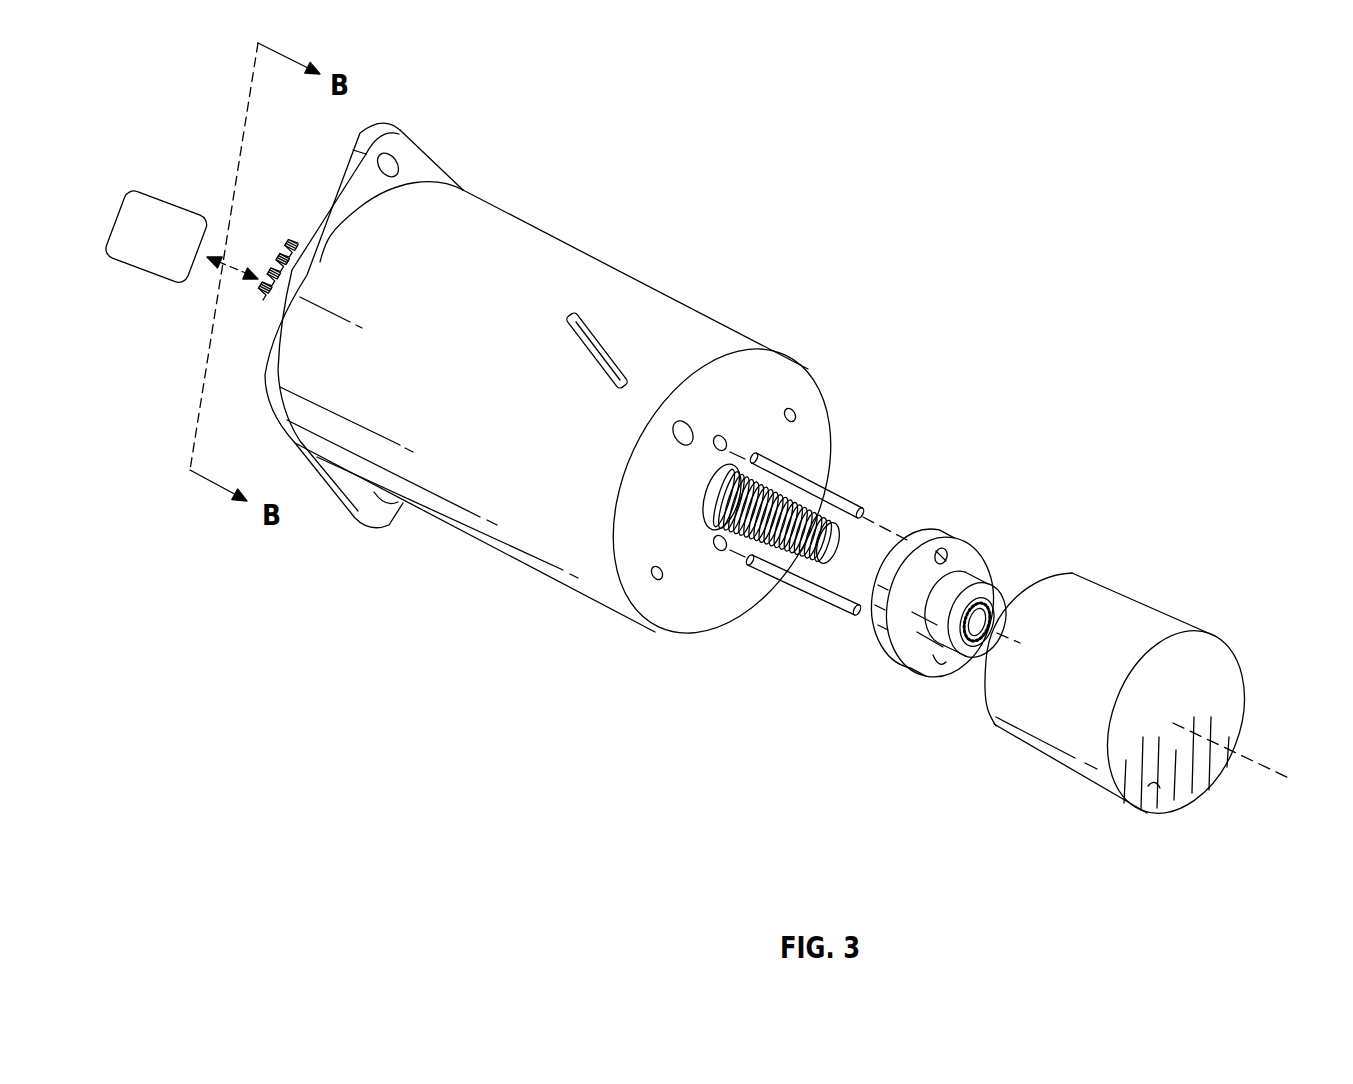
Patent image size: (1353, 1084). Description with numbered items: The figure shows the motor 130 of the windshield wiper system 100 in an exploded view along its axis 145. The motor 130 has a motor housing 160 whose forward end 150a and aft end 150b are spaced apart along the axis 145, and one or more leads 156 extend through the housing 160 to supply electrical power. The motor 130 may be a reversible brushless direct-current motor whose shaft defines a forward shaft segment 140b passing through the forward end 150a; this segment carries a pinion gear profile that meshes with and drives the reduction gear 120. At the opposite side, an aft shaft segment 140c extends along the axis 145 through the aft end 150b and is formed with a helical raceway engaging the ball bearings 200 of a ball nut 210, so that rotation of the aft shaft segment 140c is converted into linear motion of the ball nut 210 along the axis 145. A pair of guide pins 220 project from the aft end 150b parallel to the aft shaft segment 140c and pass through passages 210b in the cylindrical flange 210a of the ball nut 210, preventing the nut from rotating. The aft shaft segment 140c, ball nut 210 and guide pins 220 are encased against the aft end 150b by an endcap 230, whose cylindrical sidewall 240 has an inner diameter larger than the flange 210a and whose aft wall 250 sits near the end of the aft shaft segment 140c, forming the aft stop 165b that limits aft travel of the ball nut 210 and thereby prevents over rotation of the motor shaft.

The windshield wiper system 100 is at (1170, 229).
The reduction gear 120 is at (143, 275).
The motor 130 is at (653, 332).
The forward shaft segment 140b is at (297, 229).
The aft shaft segment 140c is at (735, 468).
The axis 145 is at (1293, 785).
The forward end 150a is at (357, 518).
The aft end 150b is at (687, 607).
The leads 156 is at (581, 316).
The motor housing 160 is at (497, 207).
The aft stop 165b is at (823, 563).
The ball bearings 200 is at (992, 603).
The ball nut 210 is at (944, 626).
The flange 210a is at (893, 665).
The passages 210b is at (943, 657).
The guide pins 220 is at (845, 600).
The endcap 230 is at (1131, 690).
The sidewall 240 is at (1175, 616).
The aft wall 250 is at (1156, 790).